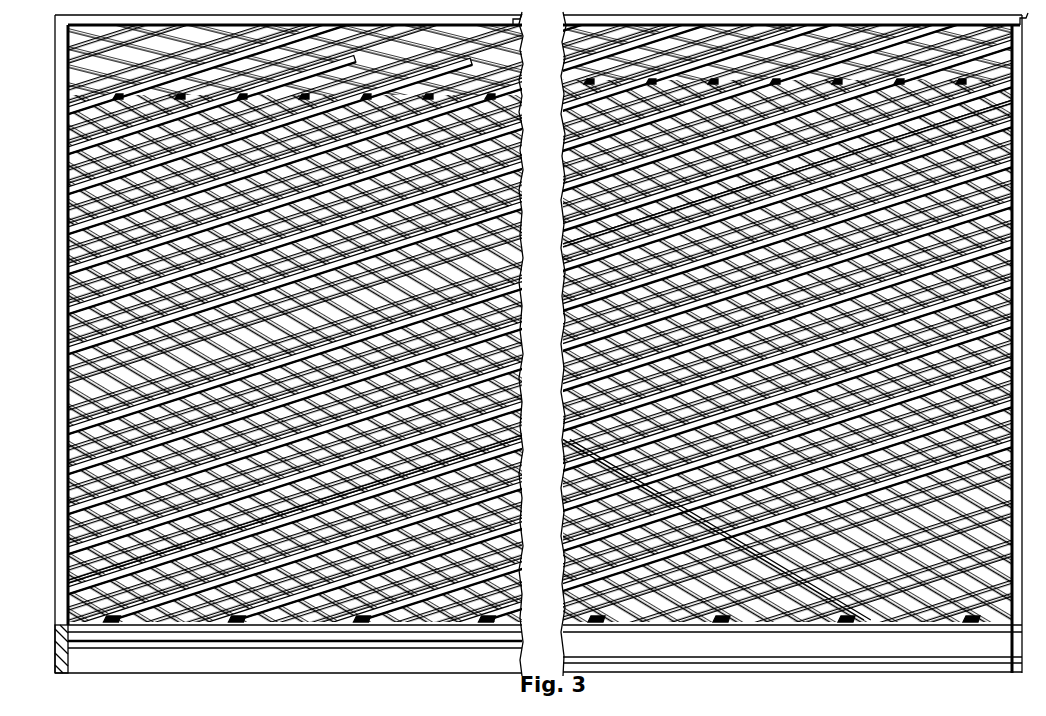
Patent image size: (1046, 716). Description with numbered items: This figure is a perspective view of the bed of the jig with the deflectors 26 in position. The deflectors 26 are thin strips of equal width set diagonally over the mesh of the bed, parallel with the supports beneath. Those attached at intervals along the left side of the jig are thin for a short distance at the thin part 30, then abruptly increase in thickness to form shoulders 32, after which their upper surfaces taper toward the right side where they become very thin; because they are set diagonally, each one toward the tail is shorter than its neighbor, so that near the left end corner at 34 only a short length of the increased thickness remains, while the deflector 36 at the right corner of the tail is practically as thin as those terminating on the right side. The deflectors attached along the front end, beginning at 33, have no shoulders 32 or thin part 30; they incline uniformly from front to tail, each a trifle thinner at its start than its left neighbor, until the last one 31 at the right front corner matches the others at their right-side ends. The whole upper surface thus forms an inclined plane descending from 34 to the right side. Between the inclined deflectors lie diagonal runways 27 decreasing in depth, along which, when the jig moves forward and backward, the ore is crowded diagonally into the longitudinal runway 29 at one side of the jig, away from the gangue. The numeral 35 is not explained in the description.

The deflectors 26 is at (380, 242).
The diagonal runways 27 is at (662, 499).
The longitudinal runway 29 is at (587, 652).
The thin part 30 is at (386, 58).
The last deflector 31 is at (68, 580).
The shoulders 32 is at (1002, 91).
The beginning of front-end deflectors 33 is at (68, 131).
The shoulder near left end corner 34 is at (992, 99).
The batten 35 is at (252, 96).
The deflector at right tail corner 36 is at (968, 616).